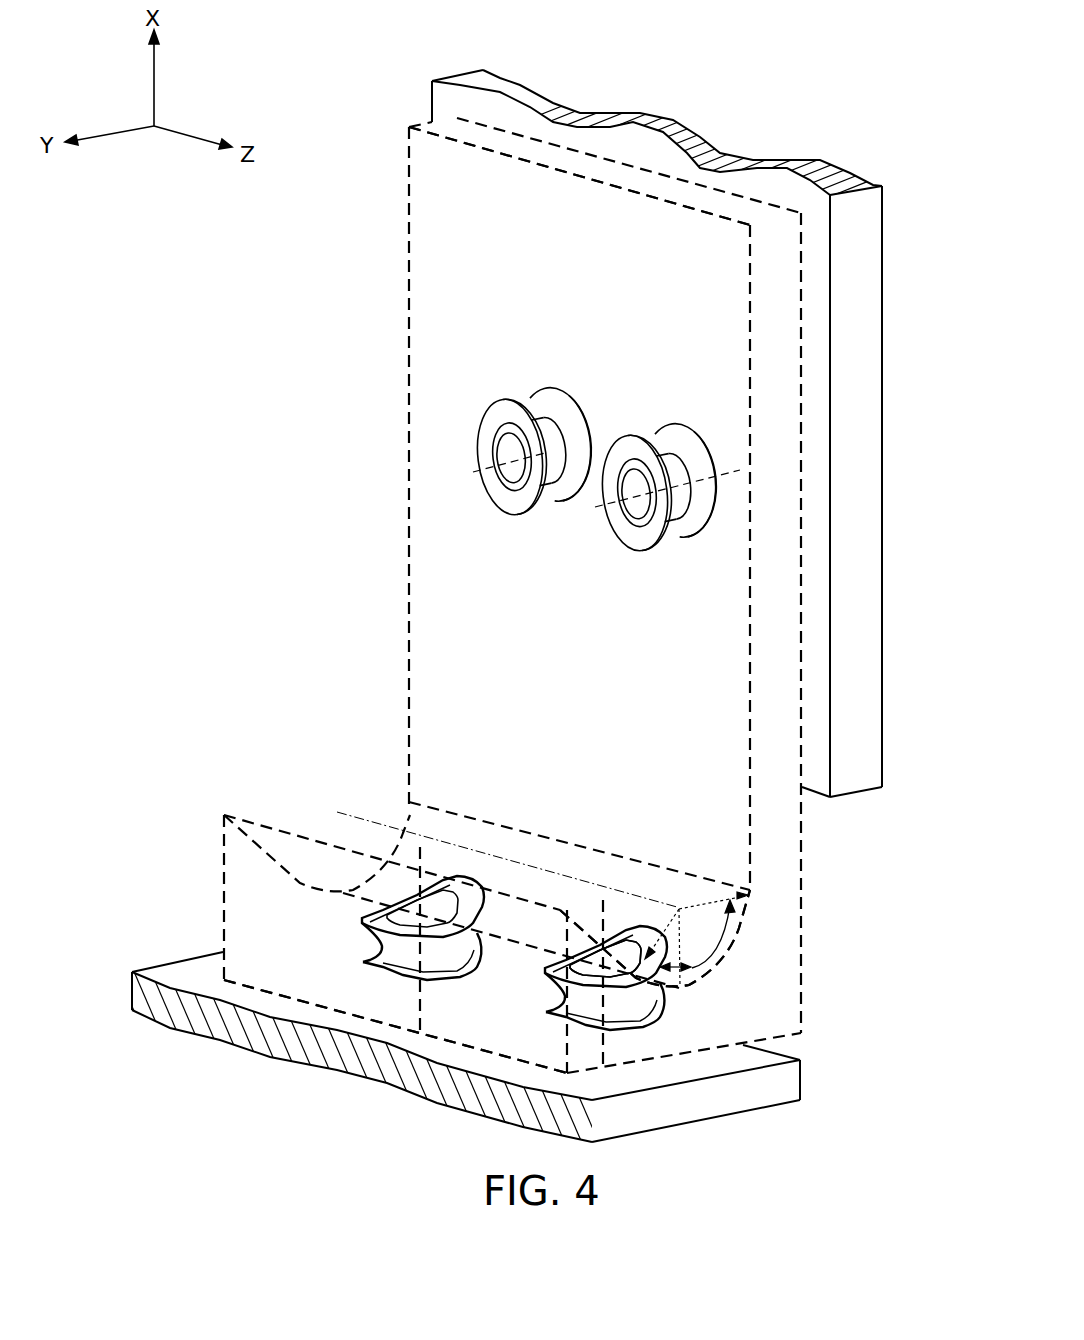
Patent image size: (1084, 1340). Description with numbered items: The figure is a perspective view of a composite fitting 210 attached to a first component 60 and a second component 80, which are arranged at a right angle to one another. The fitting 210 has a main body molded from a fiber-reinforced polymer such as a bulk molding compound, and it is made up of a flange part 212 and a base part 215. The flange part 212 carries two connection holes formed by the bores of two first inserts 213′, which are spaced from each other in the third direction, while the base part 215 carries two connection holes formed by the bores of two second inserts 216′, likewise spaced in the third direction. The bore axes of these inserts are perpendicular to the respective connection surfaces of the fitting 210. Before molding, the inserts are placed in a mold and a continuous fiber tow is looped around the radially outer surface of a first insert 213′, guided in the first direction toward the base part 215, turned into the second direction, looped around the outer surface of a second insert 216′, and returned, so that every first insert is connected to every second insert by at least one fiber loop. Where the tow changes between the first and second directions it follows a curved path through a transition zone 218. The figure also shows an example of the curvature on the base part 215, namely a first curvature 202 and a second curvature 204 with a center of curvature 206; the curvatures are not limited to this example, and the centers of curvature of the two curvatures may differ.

The first component 60 is at (833, 180).
The second component 80 is at (160, 1012).
The first curvature 202 is at (692, 968).
The second curvature 204 is at (668, 970).
The center of curvature 206 is at (679, 909).
The fitting 210 is at (640, 155).
The flange part 212 is at (440, 340).
The first insert 213′ is at (483, 445).
The base part 215 is at (287, 950).
The second insert 216′ is at (367, 963).
The transition zone 218 is at (778, 948).